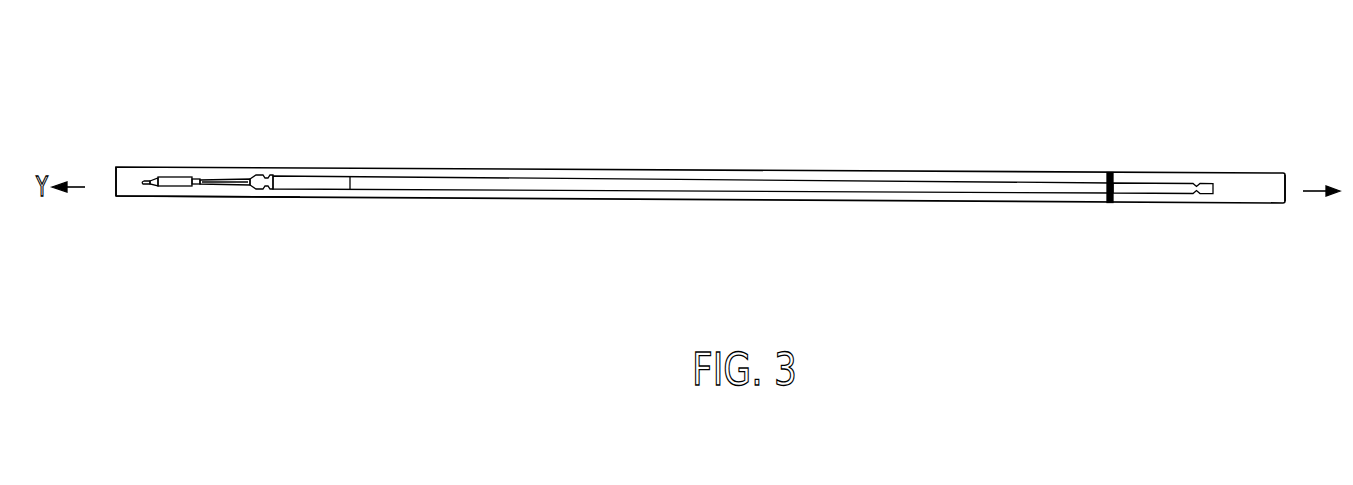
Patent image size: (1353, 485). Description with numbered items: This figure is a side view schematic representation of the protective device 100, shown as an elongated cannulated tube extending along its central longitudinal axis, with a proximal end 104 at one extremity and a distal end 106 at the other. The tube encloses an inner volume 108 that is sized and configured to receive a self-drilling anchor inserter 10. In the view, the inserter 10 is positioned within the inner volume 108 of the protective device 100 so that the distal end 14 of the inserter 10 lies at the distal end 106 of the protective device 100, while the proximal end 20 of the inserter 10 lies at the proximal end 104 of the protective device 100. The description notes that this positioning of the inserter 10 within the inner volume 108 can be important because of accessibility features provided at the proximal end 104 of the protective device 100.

The protective device 100 is at (680, 80).
The self-drilling anchor inserter 10 is at (612, 194).
The distal end of the inserter 14 is at (163, 167).
The proximal end of the inserter 20 is at (1158, 172).
The proximal end 104 is at (1260, 138).
The distal end 106 is at (130, 137).
The inner volume 108 is at (132, 197).